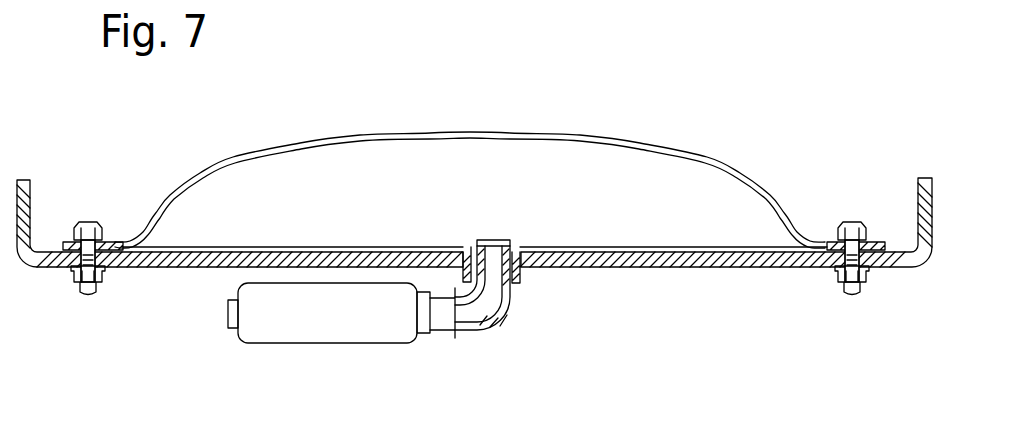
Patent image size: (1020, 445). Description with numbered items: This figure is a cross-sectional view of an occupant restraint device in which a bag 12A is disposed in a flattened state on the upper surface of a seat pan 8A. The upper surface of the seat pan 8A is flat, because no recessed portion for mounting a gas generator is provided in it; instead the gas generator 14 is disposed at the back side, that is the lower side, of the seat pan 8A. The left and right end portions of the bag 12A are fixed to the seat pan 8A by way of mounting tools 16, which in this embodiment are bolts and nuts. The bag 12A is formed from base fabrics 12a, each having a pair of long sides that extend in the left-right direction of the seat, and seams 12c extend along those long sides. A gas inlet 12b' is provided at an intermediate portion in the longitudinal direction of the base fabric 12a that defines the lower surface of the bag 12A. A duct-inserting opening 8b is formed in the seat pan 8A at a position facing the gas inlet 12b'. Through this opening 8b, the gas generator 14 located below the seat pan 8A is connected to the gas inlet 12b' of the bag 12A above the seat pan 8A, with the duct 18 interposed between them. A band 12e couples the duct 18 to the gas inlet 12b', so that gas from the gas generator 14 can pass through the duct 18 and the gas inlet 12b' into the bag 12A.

The seat pan 8A is at (775, 268).
The duct-inserting opening 8b is at (523, 282).
The bag 12A is at (699, 126).
The base fabric 12a is at (293, 247).
The seam 12c is at (118, 246).
The band 12e is at (466, 247).
The gas inlet 12b' is at (504, 297).
The gas generator 14 is at (315, 328).
The mounting tool 16 is at (88, 225).
The duct 18 is at (480, 327).